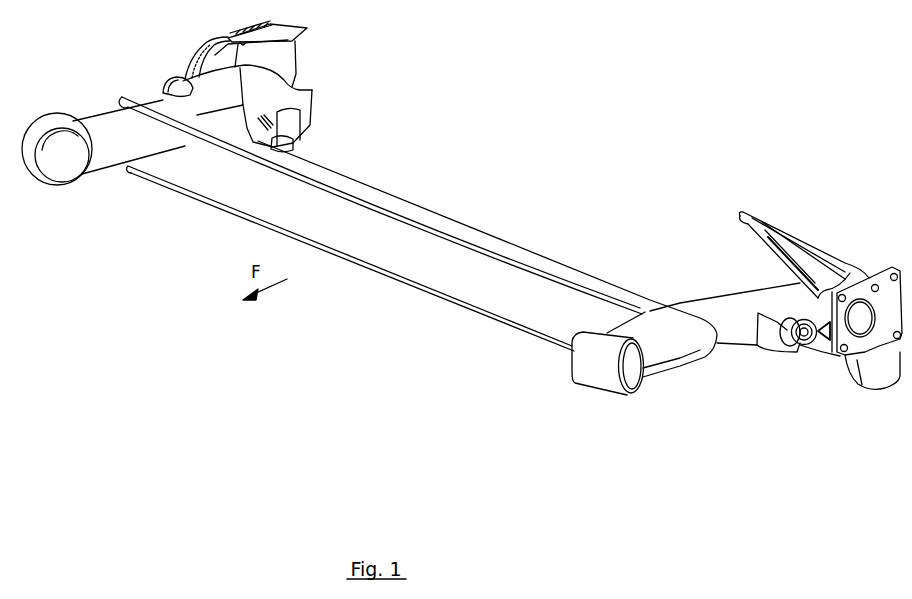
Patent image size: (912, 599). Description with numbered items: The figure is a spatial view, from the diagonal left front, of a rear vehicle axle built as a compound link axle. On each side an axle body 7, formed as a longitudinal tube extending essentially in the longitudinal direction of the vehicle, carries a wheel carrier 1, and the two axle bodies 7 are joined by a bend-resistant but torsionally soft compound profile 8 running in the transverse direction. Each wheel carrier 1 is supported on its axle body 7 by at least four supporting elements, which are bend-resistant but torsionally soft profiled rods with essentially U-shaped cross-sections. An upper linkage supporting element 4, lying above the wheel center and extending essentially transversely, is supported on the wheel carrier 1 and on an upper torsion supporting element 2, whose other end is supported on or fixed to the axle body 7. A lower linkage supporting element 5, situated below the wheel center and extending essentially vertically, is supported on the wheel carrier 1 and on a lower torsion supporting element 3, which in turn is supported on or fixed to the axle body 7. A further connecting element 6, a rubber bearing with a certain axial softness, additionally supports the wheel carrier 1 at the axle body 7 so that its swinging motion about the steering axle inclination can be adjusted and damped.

The wheel carrier 1 is at (212, 55).
The upper torsion supporting element 2 is at (768, 250).
The lower torsion supporting element 3 is at (280, 123).
The upper linkage supporting element 4 is at (806, 248).
The lower linkage supporting element 5 is at (283, 143).
The further connecting element 6 is at (160, 87).
The axle body 7 is at (297, 92).
The compound profile 8 is at (452, 220).